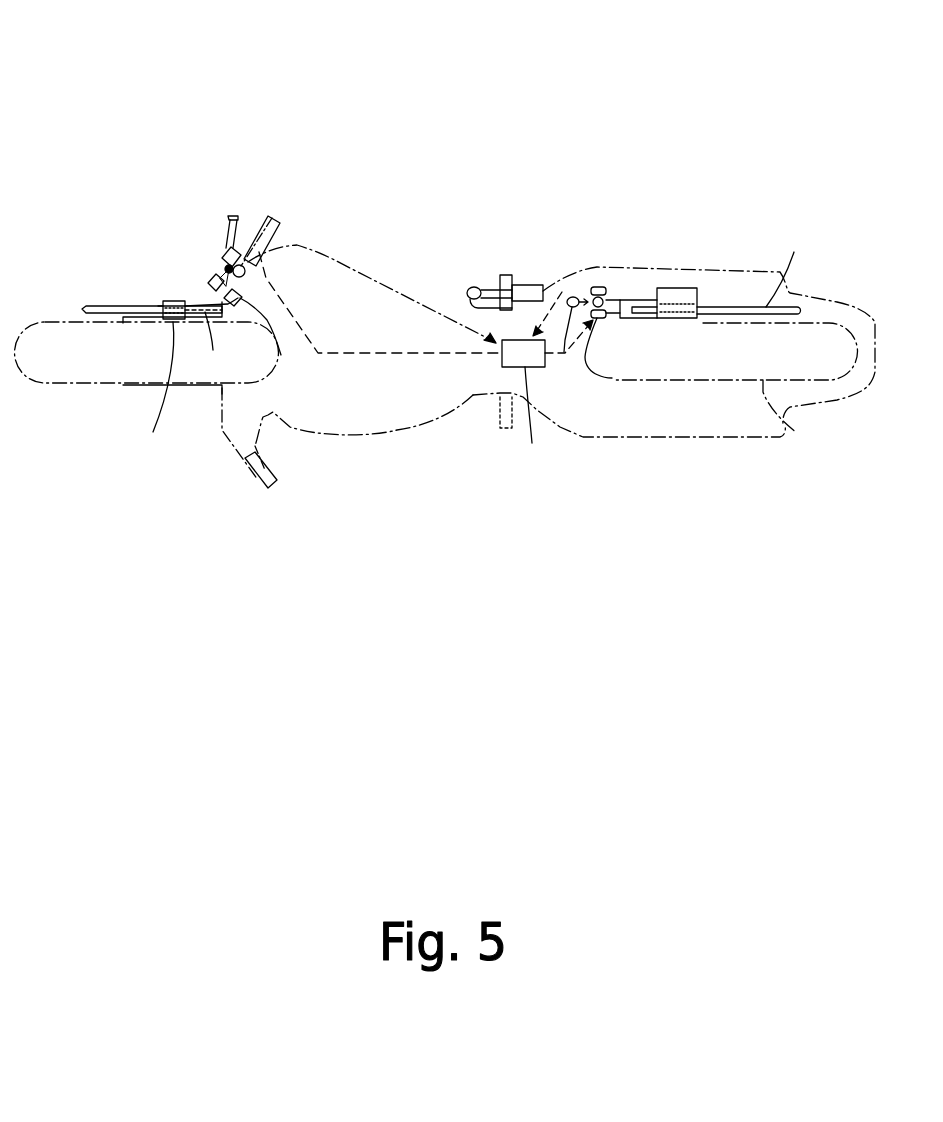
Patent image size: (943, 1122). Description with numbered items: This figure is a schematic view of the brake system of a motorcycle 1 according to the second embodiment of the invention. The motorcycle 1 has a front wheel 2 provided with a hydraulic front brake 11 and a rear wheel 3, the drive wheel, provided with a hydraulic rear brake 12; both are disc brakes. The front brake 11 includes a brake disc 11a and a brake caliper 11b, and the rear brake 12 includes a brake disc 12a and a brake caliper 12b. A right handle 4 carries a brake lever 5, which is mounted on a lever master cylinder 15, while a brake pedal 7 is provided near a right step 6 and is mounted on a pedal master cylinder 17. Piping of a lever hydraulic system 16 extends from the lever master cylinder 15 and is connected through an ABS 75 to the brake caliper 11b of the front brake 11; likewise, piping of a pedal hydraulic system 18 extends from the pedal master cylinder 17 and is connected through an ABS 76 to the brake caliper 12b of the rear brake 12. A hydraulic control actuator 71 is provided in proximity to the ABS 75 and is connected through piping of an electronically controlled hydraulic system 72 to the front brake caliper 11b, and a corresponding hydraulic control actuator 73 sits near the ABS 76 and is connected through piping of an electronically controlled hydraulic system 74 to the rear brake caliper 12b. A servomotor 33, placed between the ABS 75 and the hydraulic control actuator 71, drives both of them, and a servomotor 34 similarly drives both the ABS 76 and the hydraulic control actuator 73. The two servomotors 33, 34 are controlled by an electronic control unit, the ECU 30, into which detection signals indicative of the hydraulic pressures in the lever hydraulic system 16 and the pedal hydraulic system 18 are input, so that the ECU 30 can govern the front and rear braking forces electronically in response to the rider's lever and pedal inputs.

The motorcycle 1 is at (456, 170).
The front wheel 2 is at (65, 384).
The rear wheel 3 is at (797, 433).
The right handle 4 is at (278, 228).
The brake lever 5 is at (238, 214).
The right step 6 is at (502, 275).
The brake pedal 7 is at (468, 285).
The front brake 11 is at (156, 296).
The brake disc 11a is at (88, 304).
The brake caliper 11b is at (157, 395).
The rear brake 12 is at (707, 286).
The brake disc 12a is at (794, 264).
The brake caliper 12b is at (672, 288).
The lever master cylinder 15 is at (221, 248).
The lever hydraulic system 16 is at (203, 303).
The pedal master cylinder 17 is at (520, 285).
The pedal hydraulic system 18 is at (636, 292).
The electronic control unit (ECU) 30 is at (523, 409).
The servomotor 33 is at (248, 277).
The servomotor 34 is at (563, 322).
The hydraulic control actuator 71 is at (264, 336).
The electronically controlled hydraulic system 72 is at (209, 344).
The hydraulic control actuator 73 is at (600, 320).
The electronically controlled hydraulic system 74 is at (617, 323).
The ABS 75 is at (213, 276).
The ABS 76 is at (598, 287).